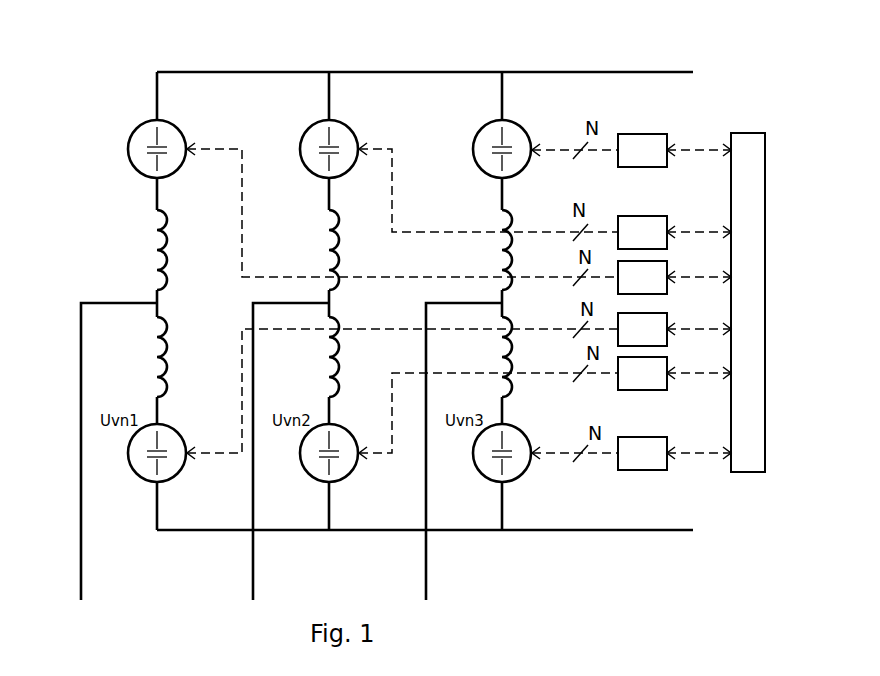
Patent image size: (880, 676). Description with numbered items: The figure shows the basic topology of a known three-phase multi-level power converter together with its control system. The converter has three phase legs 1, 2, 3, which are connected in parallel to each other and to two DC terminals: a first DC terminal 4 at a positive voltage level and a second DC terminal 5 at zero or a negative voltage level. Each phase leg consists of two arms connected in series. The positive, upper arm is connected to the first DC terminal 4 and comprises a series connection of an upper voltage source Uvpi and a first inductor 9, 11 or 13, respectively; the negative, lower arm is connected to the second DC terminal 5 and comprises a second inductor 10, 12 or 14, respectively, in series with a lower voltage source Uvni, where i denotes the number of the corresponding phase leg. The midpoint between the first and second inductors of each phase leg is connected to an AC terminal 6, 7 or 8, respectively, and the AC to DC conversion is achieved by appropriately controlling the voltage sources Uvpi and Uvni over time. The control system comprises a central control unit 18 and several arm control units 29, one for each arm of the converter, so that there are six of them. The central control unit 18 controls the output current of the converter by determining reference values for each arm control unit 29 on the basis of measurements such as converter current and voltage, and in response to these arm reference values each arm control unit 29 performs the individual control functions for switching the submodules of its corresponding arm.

The phase leg 1 is at (156, 194).
The phase leg 2 is at (328, 194).
The phase leg 3 is at (501, 194).
The first DC terminal 4 is at (678, 73).
The second DC terminal 5 is at (682, 529).
The AC terminal 6 is at (80, 577).
The AC terminal 7 is at (252, 577).
The AC terminal 8 is at (425, 577).
The first inductor 9 is at (156, 254).
The second inductor 10 is at (156, 361).
The first inductor 11 is at (328, 254).
The second inductor 12 is at (328, 361).
The first inductor 13 is at (501, 254).
The second inductor 14 is at (501, 361).
The central control unit 18 is at (745, 133).
The arm control unit 29 is at (631, 117).